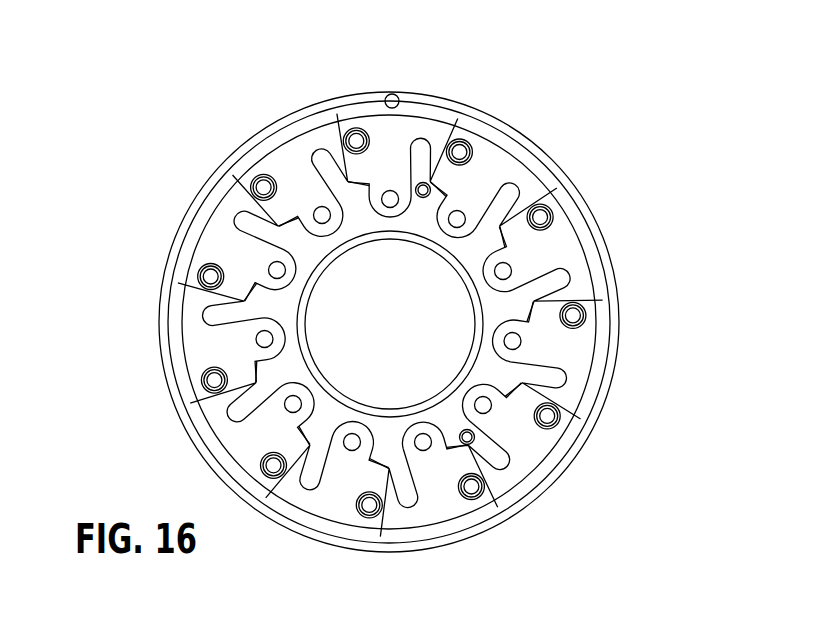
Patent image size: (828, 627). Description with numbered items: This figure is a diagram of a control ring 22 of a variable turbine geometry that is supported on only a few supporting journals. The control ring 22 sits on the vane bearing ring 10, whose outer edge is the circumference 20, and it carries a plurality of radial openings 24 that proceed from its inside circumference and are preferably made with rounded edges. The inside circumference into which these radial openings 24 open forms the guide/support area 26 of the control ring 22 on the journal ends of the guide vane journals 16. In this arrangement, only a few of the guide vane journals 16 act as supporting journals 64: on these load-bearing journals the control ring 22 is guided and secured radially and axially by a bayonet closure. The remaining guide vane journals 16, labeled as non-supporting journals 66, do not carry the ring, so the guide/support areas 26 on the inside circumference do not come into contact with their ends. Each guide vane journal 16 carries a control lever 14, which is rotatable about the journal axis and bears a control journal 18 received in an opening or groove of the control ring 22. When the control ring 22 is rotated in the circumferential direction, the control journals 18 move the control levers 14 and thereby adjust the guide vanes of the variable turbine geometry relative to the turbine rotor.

The vane bearing ring 10 is at (192, 274).
The control lever 14 is at (436, 428).
The guide vane journal 16 is at (431, 191).
The control journal 18 is at (250, 184).
The circumference of the vane bearing ring 20 is at (556, 478).
The control ring 22 is at (567, 243).
The radial opening 24 is at (427, 160).
The guide/support area 26 is at (278, 271).
The supporting journal 64 is at (296, 279).
The non-supporting guide vane journal 66 is at (320, 210).